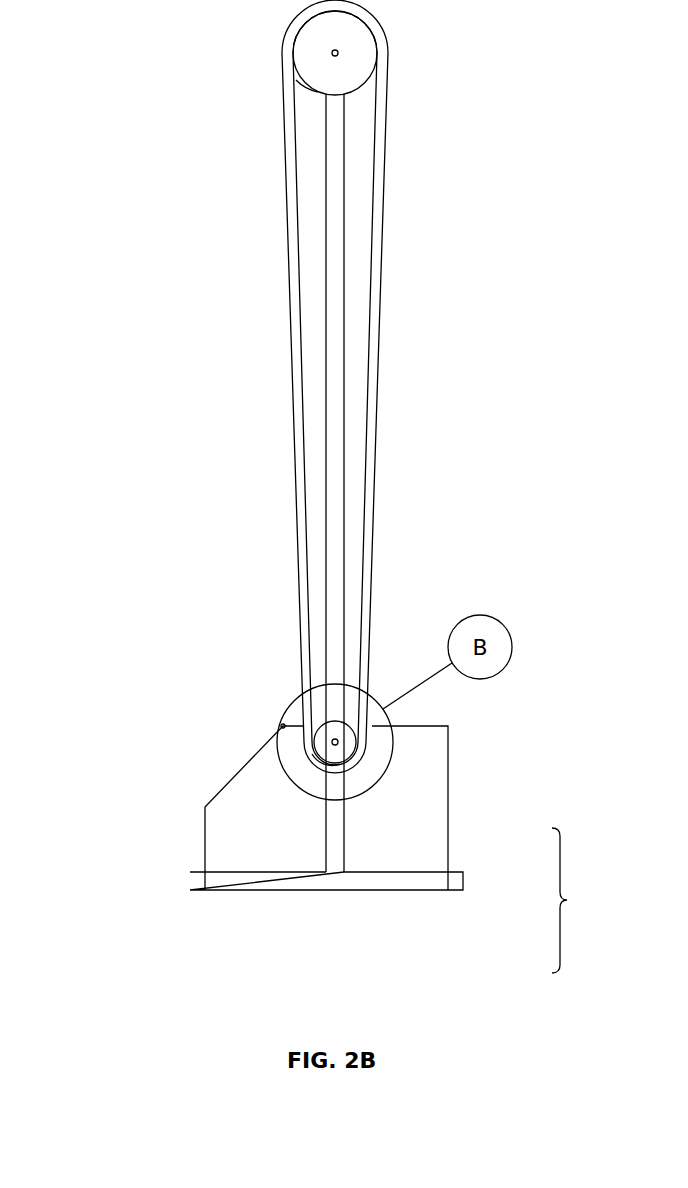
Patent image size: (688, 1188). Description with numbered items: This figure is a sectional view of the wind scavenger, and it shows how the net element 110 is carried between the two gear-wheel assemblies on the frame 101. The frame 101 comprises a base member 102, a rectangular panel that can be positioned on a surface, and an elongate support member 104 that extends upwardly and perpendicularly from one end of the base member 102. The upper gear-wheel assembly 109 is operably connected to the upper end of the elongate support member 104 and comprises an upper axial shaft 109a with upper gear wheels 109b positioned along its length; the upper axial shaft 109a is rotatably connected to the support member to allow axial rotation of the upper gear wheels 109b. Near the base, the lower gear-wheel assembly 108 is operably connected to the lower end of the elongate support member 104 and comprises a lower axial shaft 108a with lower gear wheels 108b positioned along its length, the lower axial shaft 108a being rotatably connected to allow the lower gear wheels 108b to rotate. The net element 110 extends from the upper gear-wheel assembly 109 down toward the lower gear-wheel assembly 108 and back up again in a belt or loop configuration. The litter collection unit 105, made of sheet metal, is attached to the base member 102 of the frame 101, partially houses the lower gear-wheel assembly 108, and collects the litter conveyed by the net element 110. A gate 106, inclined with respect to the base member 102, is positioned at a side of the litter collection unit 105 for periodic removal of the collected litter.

The frame 101 is at (583, 900).
The base member 102 is at (429, 898).
The elongate support member 104 is at (358, 243).
The litter collection unit 105 is at (425, 785).
The gate 106 is at (238, 757).
The lower gear-wheel assembly 108 is at (310, 718).
The lower axial shaft 108a is at (354, 738).
The lower gear wheels 108b is at (310, 774).
The upper gear-wheel assembly 109 is at (365, 47).
The upper axial shaft 109a is at (355, 65).
The upper gear wheels 109b is at (297, 100).
The net element 110 is at (396, 357).